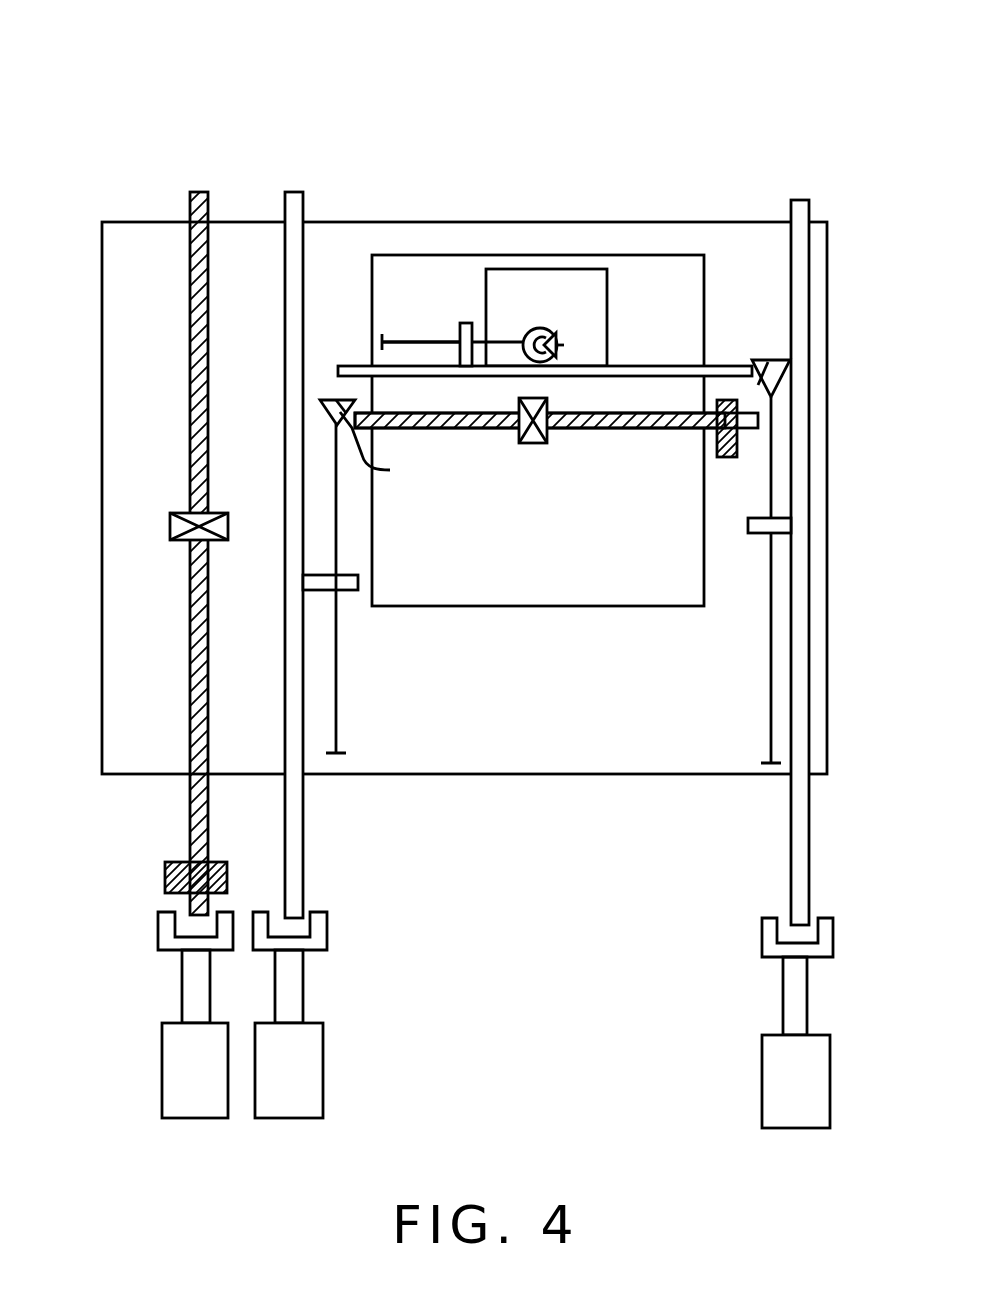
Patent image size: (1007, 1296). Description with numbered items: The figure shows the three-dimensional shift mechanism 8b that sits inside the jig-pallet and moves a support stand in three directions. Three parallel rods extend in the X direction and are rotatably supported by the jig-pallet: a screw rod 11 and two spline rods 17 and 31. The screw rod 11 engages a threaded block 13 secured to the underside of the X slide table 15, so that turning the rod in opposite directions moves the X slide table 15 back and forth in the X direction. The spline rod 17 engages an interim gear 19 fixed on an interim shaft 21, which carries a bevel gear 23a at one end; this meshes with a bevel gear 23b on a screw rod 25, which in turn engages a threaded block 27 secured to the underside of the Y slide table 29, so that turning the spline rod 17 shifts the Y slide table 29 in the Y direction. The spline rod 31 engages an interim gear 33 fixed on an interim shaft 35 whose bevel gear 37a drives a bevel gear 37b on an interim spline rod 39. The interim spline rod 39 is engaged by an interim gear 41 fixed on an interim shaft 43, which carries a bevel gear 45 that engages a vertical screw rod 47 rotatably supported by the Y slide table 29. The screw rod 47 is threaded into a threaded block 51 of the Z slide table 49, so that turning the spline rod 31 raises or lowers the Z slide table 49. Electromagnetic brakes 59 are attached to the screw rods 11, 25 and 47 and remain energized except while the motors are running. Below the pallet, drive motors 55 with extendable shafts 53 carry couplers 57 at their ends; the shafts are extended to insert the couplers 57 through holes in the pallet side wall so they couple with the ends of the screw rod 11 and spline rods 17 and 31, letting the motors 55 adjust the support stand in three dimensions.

The three-dimensional shift mechanism 8b is at (640, 134).
The screw rod 11 is at (190, 632).
The threaded block 13 is at (170, 527).
The X slide table 15 is at (144, 222).
The spline rod 17 is at (303, 822).
The interim gear 19 is at (350, 590).
The interim shaft 21 is at (336, 722).
The bevel gear 23a is at (334, 400).
The bevel gear 23b is at (395, 451).
The screw rod 25 is at (603, 428).
The threaded block 27 is at (523, 443).
The Y slide table 29 is at (530, 606).
The spline rod 31 is at (791, 826).
The interim gear 33 is at (752, 533).
The interim shaft 35 is at (771, 672).
The bevel gear 37a is at (772, 360).
The bevel gear 37b is at (755, 361).
The interim spline rod 39 is at (674, 366).
The interim gear 41 is at (452, 332).
The interim shaft 43 is at (400, 340).
The bevel gear 45 is at (550, 342).
The screw rod 47 is at (543, 336).
The Z slide table 49 is at (560, 343).
The threaded block 51 is at (534, 328).
The extendable shaft 53 is at (182, 992).
The drive motor 55 is at (162, 1080).
The coupler 57 is at (158, 935).
The electromagnetic brake 59 is at (523, 341).